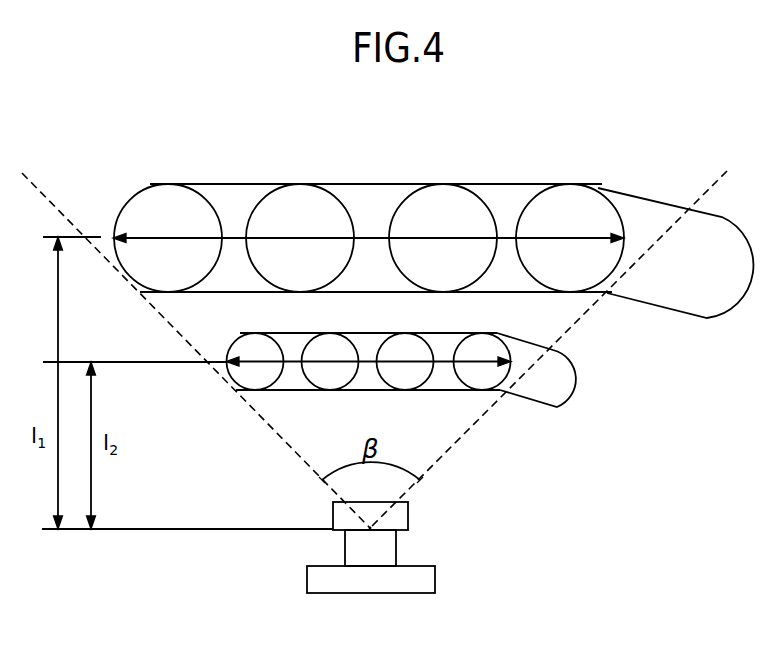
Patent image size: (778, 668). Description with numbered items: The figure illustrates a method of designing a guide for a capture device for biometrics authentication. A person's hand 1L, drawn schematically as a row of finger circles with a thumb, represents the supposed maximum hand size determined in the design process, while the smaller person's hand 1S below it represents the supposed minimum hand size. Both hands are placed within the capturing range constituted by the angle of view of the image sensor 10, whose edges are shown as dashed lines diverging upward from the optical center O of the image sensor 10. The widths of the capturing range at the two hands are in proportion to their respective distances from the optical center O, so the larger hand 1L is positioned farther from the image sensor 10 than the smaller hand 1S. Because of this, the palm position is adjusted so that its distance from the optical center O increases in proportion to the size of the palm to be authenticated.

The person's hand 1L is at (467, 166).
The person's hand 1S is at (595, 381).
The image sensor 10 is at (370, 594).
The optical center O is at (370, 528).